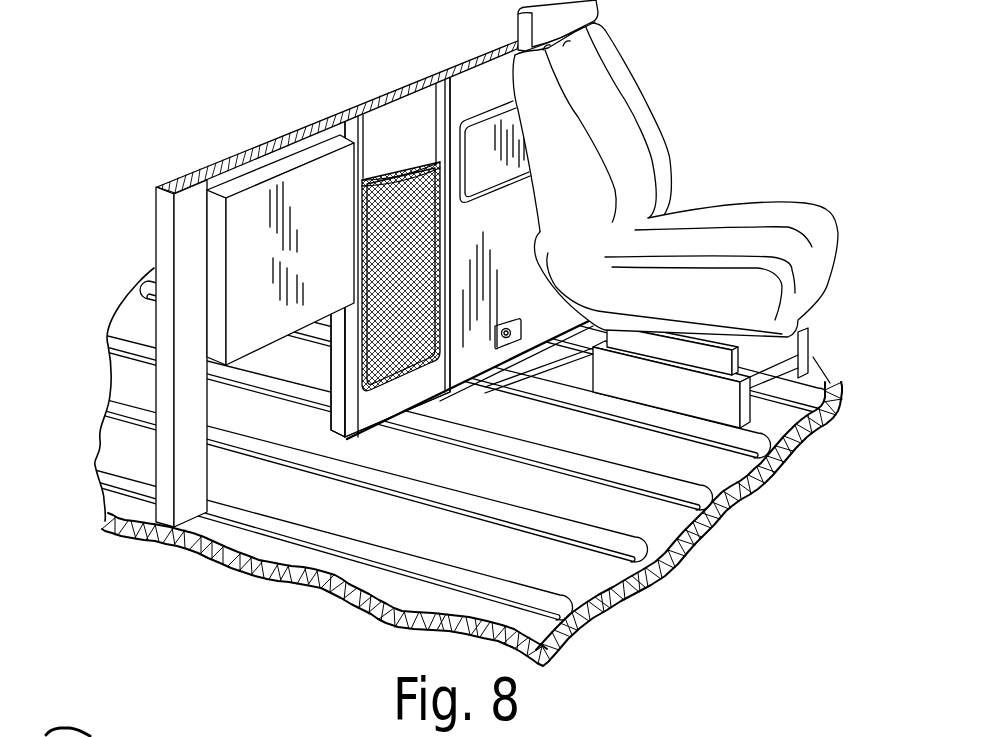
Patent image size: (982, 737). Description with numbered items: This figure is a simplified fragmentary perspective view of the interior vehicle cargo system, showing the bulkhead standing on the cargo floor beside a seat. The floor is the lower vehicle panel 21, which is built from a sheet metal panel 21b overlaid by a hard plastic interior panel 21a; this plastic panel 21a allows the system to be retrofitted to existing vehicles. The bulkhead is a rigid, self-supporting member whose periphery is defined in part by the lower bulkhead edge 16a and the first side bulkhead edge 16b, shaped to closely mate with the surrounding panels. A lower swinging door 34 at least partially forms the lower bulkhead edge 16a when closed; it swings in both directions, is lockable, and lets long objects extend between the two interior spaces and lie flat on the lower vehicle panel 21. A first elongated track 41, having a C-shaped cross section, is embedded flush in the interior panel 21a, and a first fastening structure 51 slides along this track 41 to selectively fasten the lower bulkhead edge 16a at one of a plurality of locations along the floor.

The lower bulkhead edge 16a is at (418, 404).
The first side bulkhead edge 16b is at (167, 221).
The lower vehicle panel 21 is at (461, 452).
The hard plastic interior panel 21a is at (705, 533).
The sheet metal panel 21b is at (653, 587).
The lower swinging door 34 is at (297, 187).
The first elongated track 41 is at (547, 368).
The first fastening structure 51 is at (506, 341).